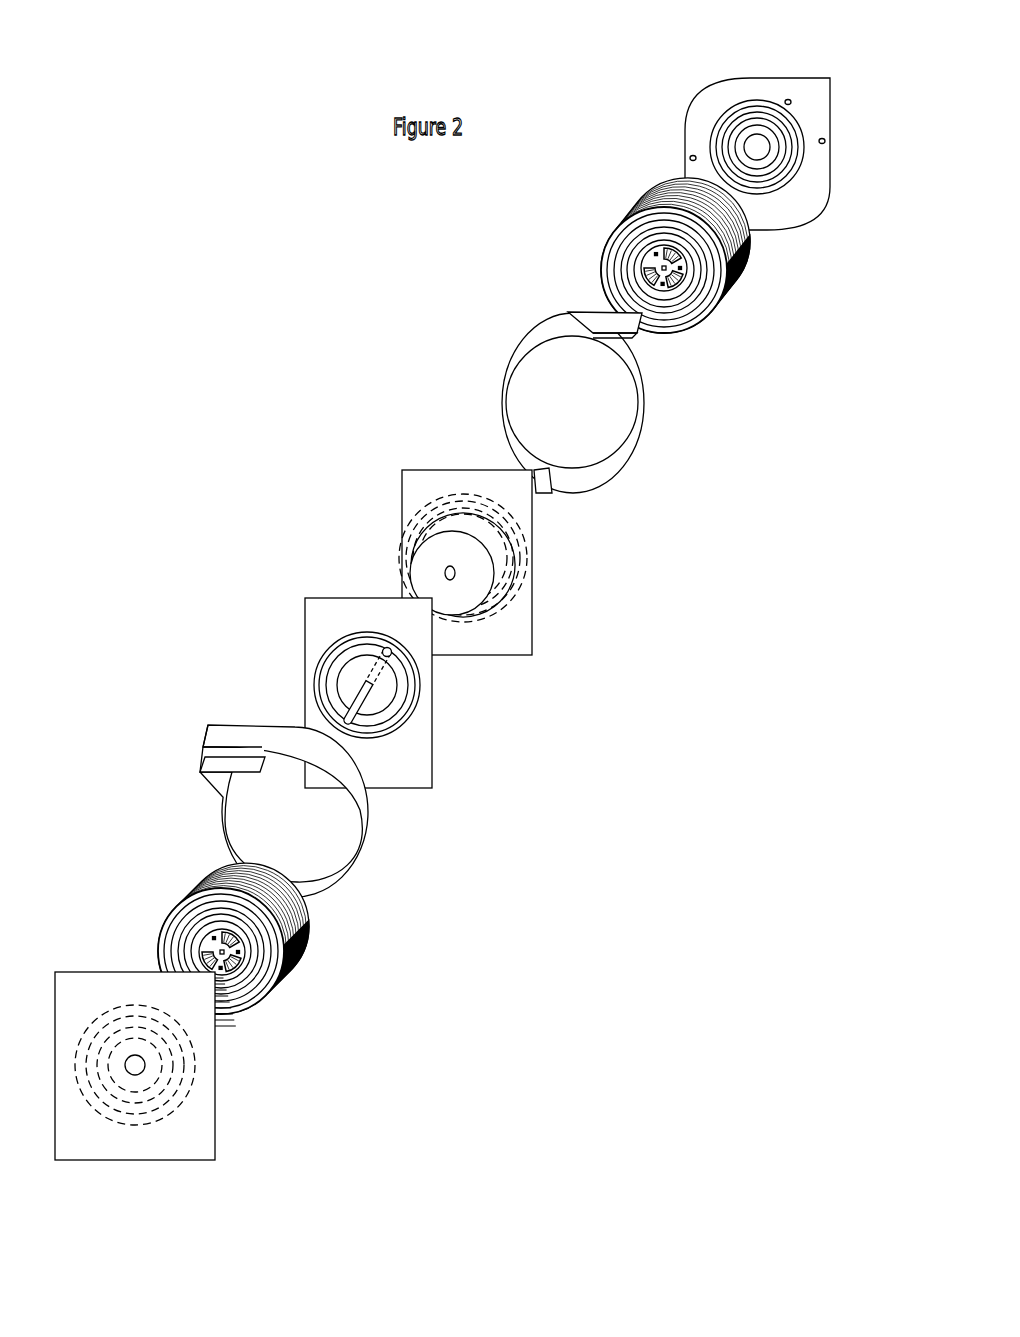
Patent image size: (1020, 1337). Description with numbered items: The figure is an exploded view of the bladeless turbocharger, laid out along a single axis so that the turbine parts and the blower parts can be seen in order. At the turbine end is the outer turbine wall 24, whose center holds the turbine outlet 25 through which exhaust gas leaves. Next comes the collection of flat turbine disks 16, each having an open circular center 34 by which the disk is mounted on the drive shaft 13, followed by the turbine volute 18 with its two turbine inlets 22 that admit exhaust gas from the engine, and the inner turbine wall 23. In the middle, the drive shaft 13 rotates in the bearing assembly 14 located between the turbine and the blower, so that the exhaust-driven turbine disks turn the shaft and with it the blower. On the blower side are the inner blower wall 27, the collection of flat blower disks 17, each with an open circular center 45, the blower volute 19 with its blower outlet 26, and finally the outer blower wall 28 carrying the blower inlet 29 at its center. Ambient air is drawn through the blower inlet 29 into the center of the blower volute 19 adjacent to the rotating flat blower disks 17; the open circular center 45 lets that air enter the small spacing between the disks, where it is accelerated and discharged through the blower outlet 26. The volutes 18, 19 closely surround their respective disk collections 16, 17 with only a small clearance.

The drive shaft 13 is at (362, 697).
The bearing assembly 14 is at (468, 575).
The flat turbine disks 16 is at (750, 255).
The flat blower disks 17 is at (308, 947).
The turbine volute 18 is at (613, 465).
The blower volute 19 is at (347, 870).
The turbine inlets 22 is at (628, 337).
The inner turbine wall 23 is at (422, 478).
The outer turbine wall 24 is at (717, 110).
The turbine outlet 25 is at (765, 150).
The blower outlet 26 is at (215, 745).
The inner blower wall 27 is at (330, 610).
The outer blower wall 28 is at (100, 988).
The blower inlet 29 is at (133, 1060).
The open circular center 34 is at (222, 972).
The open circular center 45 is at (678, 283).